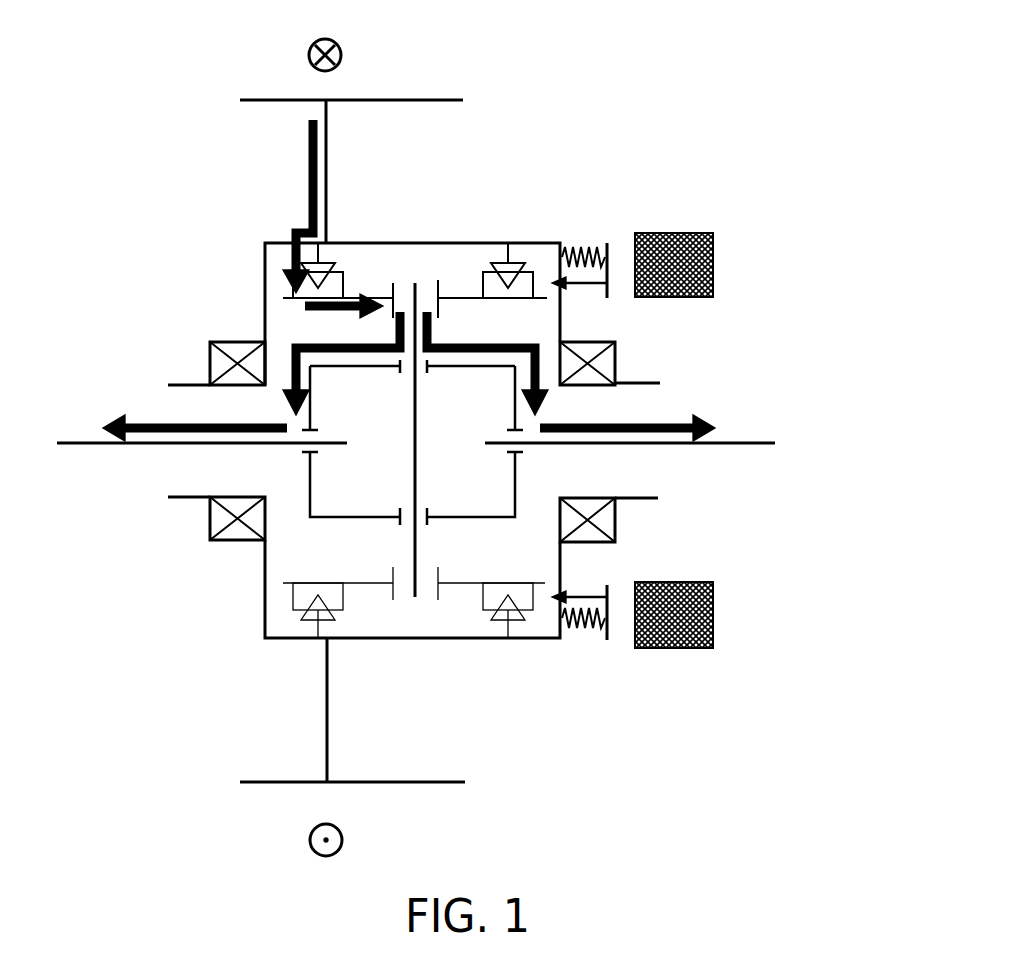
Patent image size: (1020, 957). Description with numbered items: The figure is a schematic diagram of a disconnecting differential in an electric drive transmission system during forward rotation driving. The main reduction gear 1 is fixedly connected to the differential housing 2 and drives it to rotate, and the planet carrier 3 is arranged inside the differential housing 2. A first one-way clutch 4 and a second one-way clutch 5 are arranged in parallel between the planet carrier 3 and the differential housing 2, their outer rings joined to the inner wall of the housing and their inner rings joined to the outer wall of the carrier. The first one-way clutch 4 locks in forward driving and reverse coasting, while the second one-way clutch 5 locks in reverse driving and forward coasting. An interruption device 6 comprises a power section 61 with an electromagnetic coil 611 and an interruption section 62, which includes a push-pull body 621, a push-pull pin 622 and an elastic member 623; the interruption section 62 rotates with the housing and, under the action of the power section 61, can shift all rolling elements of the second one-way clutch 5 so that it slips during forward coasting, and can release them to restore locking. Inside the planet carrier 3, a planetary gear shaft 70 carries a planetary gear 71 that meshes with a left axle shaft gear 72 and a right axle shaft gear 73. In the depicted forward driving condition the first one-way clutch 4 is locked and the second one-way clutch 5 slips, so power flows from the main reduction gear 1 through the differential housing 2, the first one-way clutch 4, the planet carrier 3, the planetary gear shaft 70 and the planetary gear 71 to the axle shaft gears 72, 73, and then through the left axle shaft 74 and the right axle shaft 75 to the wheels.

The main reduction gear 1 is at (372, 98).
The differential housing 2 is at (457, 243).
The planet carrier 3 is at (350, 298).
The first one-way clutch 4 is at (290, 263).
The second one-way clutch 5 is at (517, 265).
The interruption device 6 is at (721, 401).
The power section 61 is at (713, 248).
The electromagnetic coil 611 is at (668, 233).
The interruption section 62 is at (701, 441).
The push-pull body 621 is at (610, 283).
The push-pull pin 622 is at (592, 285).
The elastic member 623 is at (612, 266).
The planetary gear shaft 70 is at (408, 548).
The planetary gear 71 is at (348, 368).
The left axle shaft gear 72 is at (283, 392).
The right axle shaft gear 73 is at (505, 440).
The left axle shaft 74 is at (162, 445).
The right axle shaft 75 is at (557, 445).